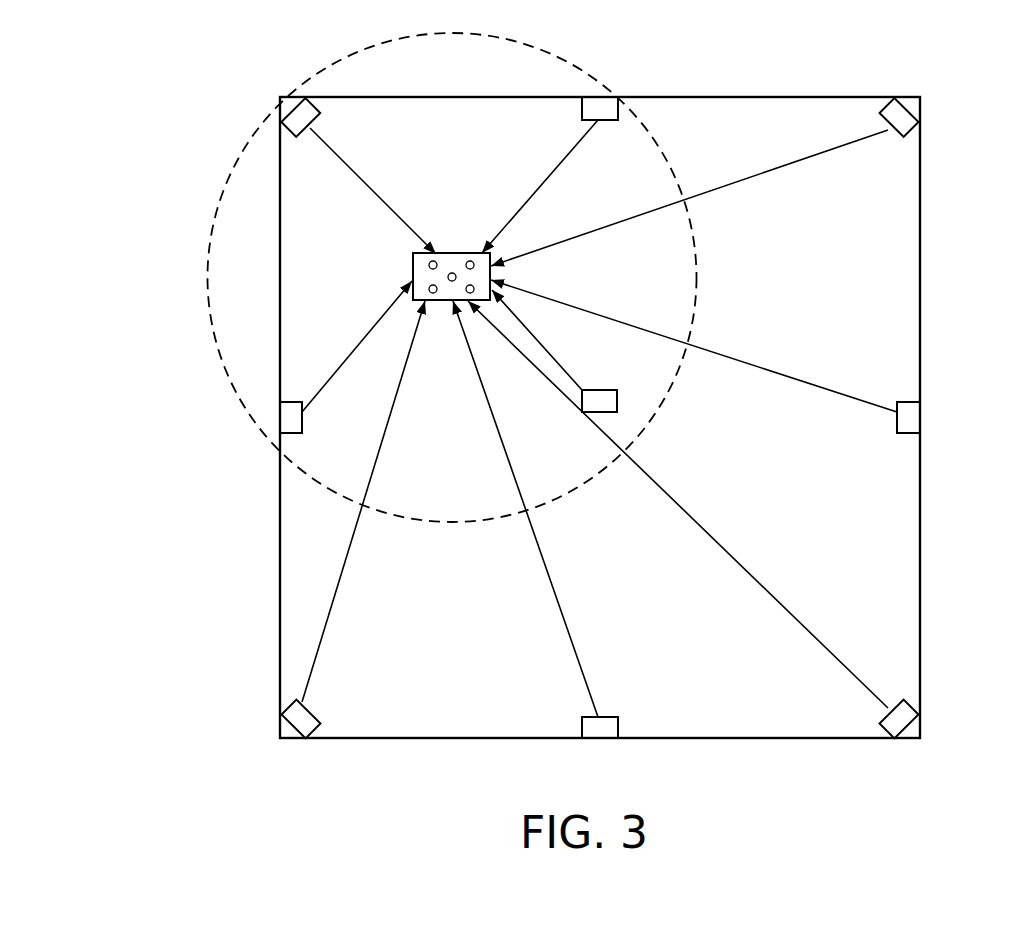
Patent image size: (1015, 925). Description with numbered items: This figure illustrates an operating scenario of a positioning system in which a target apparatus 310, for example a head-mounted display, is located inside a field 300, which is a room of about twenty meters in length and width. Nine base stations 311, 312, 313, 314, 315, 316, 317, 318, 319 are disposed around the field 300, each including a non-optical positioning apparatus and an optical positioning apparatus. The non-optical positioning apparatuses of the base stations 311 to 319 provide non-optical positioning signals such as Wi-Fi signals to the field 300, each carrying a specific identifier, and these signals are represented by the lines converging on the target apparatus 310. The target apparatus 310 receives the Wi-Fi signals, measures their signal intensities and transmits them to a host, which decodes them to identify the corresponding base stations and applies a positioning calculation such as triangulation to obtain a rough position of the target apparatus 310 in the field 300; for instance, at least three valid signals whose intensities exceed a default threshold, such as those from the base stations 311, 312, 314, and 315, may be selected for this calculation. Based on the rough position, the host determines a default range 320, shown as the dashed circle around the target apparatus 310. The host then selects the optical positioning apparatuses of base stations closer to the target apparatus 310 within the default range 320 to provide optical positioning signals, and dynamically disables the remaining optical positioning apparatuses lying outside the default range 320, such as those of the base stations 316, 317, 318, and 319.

The field 300 is at (921, 297).
The target apparatus 310 is at (458, 252).
The base station 311 is at (291, 124).
The base station 312 is at (601, 108).
The base station 313 is at (906, 128).
The base station 314 is at (294, 420).
The base station 315 is at (604, 390).
The base station 316 is at (910, 418).
The base station 317 is at (296, 711).
The base station 318 is at (601, 728).
The base station 319 is at (905, 711).
The default range 320 is at (206, 272).